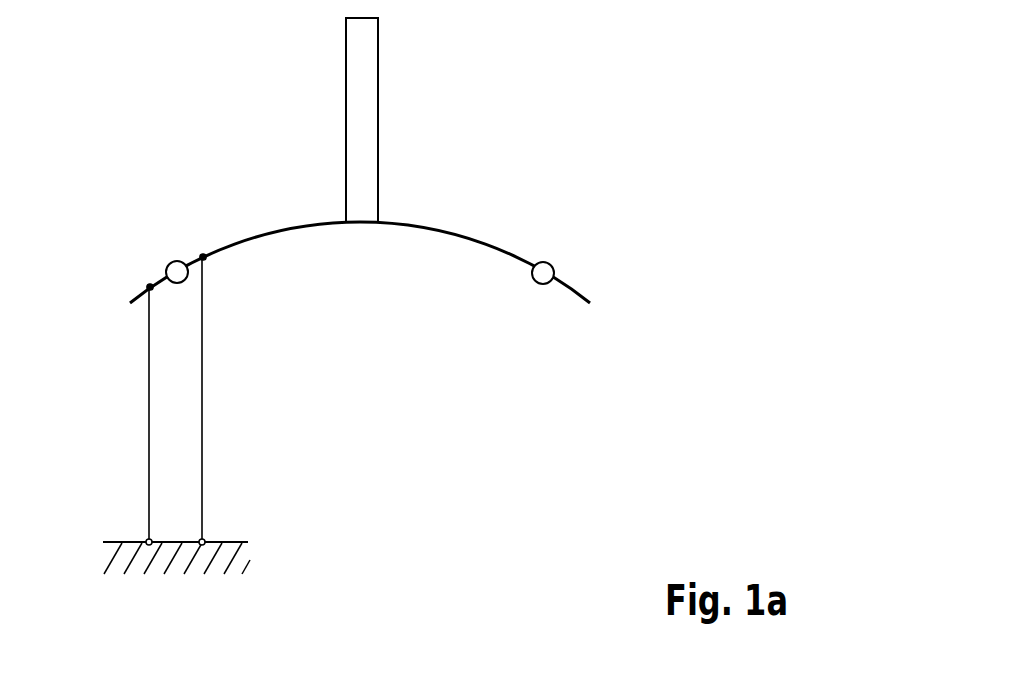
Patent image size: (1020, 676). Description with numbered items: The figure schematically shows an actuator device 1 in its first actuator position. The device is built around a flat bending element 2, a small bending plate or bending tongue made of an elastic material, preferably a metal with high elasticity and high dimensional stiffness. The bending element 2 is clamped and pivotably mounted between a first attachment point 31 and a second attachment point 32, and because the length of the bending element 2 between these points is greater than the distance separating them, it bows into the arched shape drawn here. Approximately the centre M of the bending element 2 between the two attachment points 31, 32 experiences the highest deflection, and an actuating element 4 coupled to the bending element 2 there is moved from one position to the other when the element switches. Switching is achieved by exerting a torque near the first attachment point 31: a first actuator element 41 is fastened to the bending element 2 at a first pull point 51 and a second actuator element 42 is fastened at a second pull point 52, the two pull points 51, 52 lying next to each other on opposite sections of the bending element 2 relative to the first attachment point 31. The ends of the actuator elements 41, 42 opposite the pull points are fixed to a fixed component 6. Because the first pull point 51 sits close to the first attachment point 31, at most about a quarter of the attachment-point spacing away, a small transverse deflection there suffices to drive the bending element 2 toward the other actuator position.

The actuator device 1 is at (610, 120).
The bending element 2 is at (465, 236).
The actuating element 4 is at (365, 102).
The fixed component 6 is at (225, 540).
The first attachment point 31 is at (172, 262).
The second attachment point 32 is at (543, 262).
The first actuator element 41 is at (207, 417).
The second actuator element 42 is at (149, 412).
The first pull point 51 is at (203, 255).
The second pull point 52 is at (150, 287).
The centre M is at (360, 223).